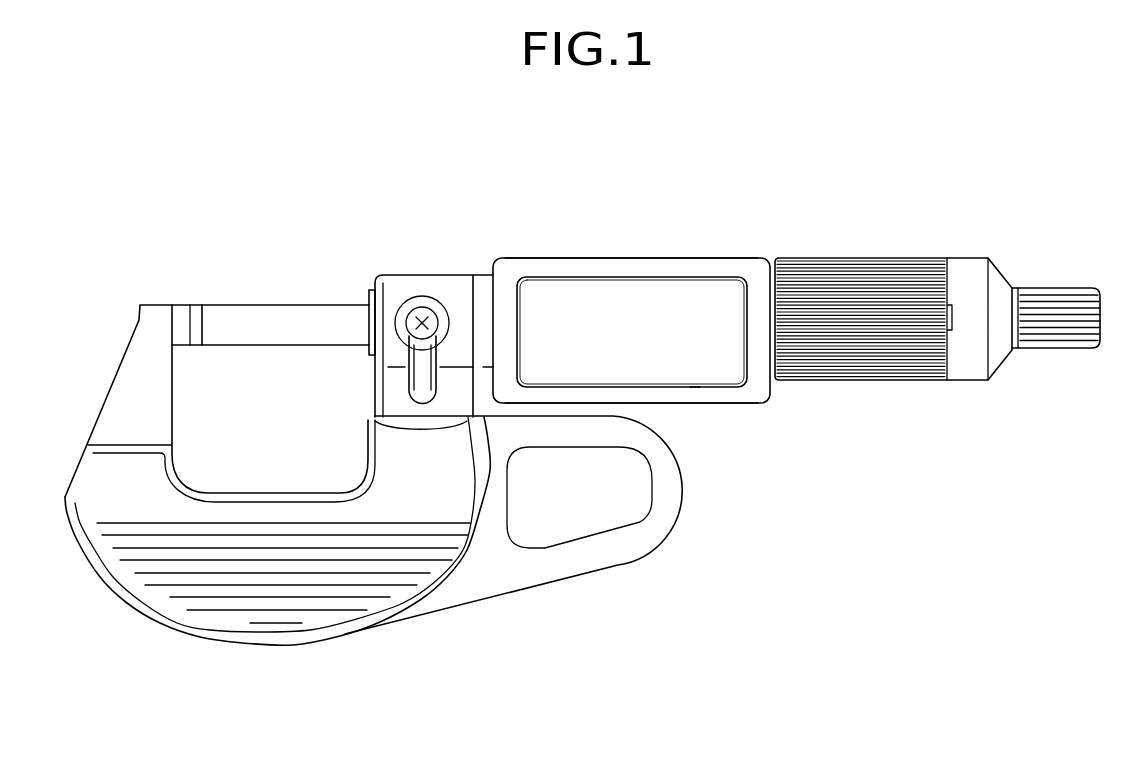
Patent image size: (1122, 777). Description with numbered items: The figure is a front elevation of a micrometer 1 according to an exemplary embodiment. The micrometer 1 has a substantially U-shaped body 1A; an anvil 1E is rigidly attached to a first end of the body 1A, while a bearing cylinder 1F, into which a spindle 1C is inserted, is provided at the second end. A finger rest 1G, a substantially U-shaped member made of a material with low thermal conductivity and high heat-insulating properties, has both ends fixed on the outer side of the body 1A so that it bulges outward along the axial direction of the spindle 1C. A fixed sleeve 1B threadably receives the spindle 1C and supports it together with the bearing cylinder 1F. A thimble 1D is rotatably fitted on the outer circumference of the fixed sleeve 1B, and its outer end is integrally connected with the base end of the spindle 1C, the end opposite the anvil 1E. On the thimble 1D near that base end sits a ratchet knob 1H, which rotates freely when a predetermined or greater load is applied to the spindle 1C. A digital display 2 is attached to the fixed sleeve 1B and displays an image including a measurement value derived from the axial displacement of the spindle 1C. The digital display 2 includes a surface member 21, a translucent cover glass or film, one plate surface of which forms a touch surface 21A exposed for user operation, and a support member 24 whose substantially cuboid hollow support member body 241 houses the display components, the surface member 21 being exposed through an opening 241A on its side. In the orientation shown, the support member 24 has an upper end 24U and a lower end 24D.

The micrometer 1 is at (778, 135).
The body 1A is at (238, 622).
The fixed sleeve 1B is at (484, 285).
The spindle 1C is at (285, 320).
The thimble 1D is at (860, 272).
The anvil 1E is at (183, 312).
The bearing cylinder 1F is at (362, 290).
The finger rest 1G is at (652, 528).
The ratchet knob 1H is at (1060, 285).
The digital display 2 is at (758, 392).
The surface member 21 is at (693, 287).
The touch surface 21A is at (568, 290).
The support member 24 is at (508, 267).
The support member body 241 is at (631, 330).
The upper end 24U is at (642, 257).
The lower end 24D is at (662, 404).
The opening 241A is at (700, 378).